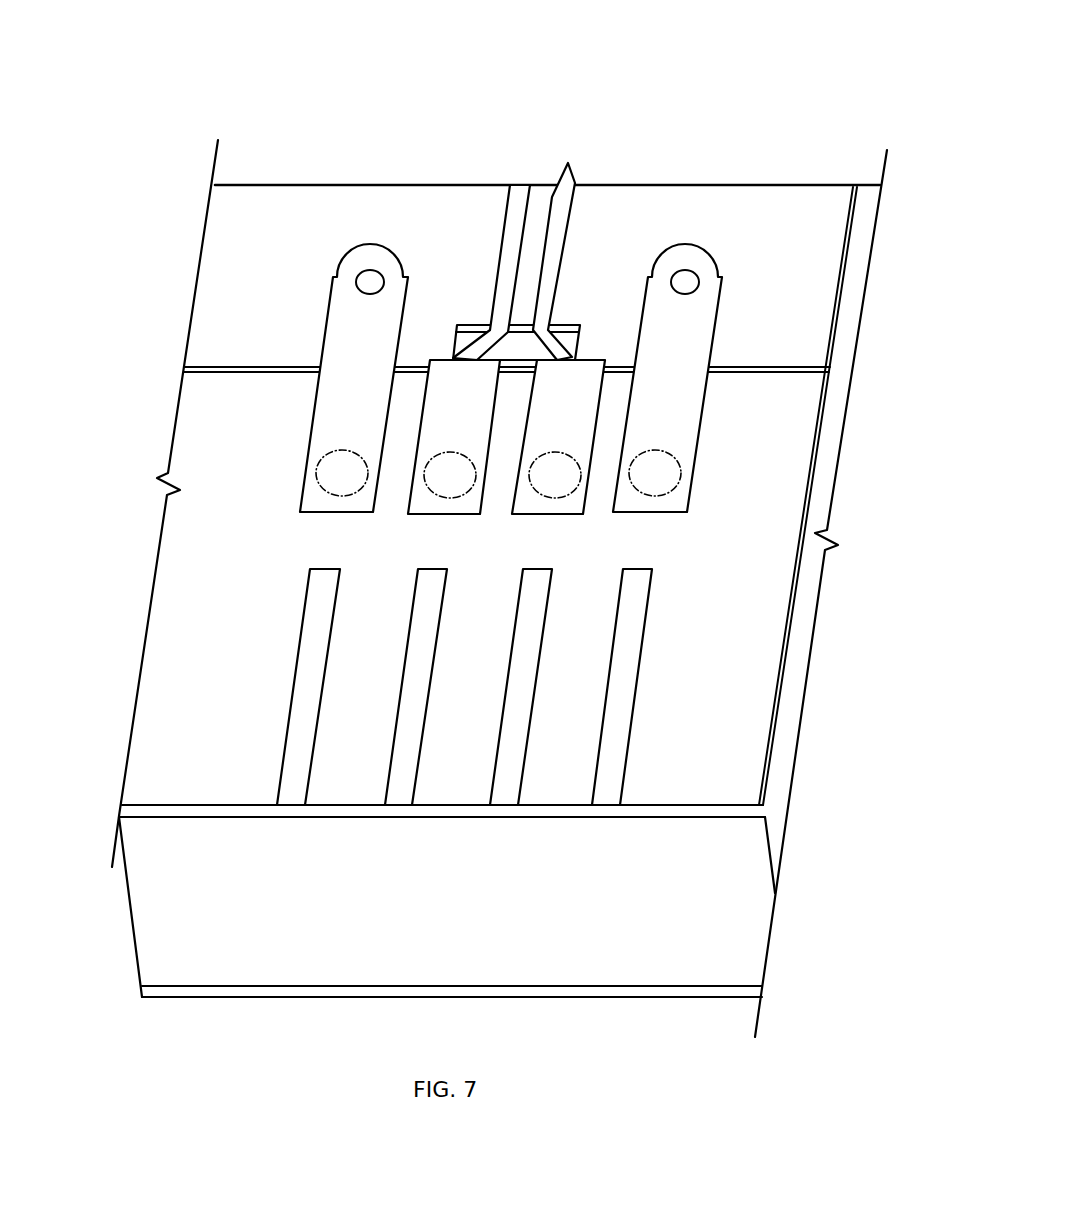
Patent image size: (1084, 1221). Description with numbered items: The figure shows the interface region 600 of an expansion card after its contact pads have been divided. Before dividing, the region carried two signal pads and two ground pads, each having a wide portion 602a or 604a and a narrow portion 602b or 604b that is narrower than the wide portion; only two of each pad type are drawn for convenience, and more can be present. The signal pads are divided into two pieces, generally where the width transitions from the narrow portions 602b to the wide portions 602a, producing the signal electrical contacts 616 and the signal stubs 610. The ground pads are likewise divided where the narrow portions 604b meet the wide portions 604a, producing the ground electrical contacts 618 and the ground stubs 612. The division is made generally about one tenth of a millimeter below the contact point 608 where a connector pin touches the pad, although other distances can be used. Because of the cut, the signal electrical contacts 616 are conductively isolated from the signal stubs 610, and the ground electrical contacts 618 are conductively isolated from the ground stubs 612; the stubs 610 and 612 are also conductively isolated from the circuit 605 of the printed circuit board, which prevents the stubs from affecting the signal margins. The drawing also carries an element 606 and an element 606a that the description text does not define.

The interface region 600 is at (259, 44).
The wide portions 602a is at (528, 500).
The narrow portions 602b is at (515, 705).
The wide portions 604a is at (362, 340).
The narrow portions 604b is at (300, 757).
The circuit 605 is at (543, 213).
The housing 606 is at (172, 652).
The housing base ledge 606a is at (745, 812).
The contact point 608 is at (300, 478).
The signal stubs 610 is at (412, 765).
The ground stubs 612 is at (317, 607).
The signal electrical contacts 616 is at (462, 387).
The ground electrical contacts 618 is at (347, 427).